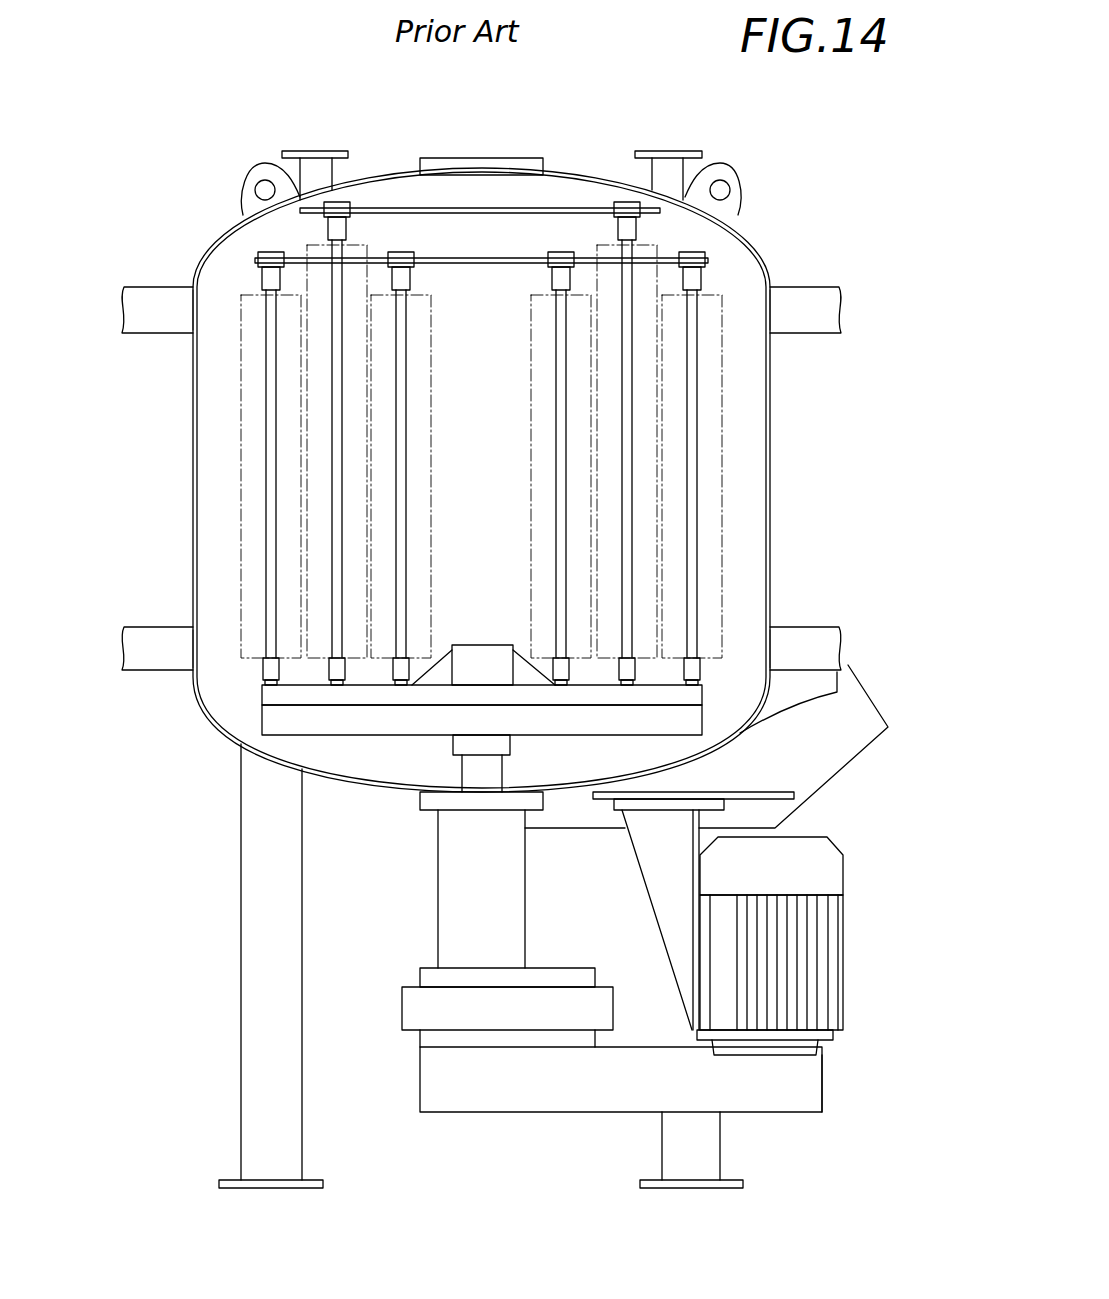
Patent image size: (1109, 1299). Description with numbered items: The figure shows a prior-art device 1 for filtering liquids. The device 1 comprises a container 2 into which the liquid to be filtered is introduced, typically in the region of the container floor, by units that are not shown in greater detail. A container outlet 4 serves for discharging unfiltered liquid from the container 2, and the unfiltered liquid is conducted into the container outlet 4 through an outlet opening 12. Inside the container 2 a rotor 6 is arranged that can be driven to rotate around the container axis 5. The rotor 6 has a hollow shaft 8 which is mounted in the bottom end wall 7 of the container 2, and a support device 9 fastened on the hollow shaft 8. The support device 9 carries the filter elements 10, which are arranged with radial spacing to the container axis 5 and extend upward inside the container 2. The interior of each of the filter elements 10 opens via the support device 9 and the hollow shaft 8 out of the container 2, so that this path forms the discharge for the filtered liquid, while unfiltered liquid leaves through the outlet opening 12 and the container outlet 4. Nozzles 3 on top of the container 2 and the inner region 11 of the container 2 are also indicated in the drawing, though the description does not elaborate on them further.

The device for filtering liquids 1 is at (200, 168).
The container 2 is at (765, 252).
The top nozzle 3 is at (313, 150).
The container outlet 4 is at (147, 325).
The container axis 5 is at (485, 130).
The rotor 6 is at (372, 719).
The bottom end wall 7 is at (480, 770).
The hollow shaft 8 is at (445, 800).
The support device 9 is at (283, 717).
The filter elements 10 is at (320, 502).
The filtration chamber 11 is at (790, 487).
The outlet opening 12 is at (192, 308).